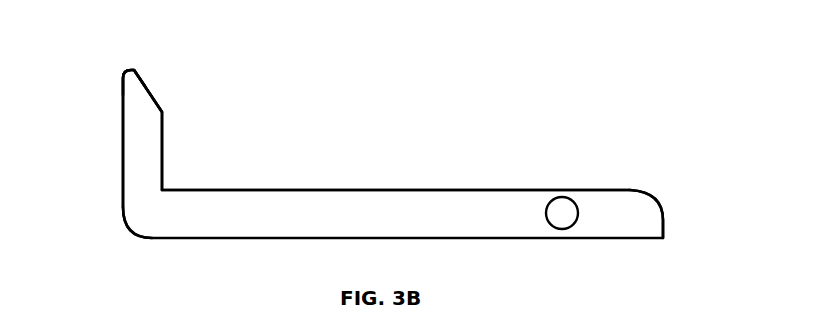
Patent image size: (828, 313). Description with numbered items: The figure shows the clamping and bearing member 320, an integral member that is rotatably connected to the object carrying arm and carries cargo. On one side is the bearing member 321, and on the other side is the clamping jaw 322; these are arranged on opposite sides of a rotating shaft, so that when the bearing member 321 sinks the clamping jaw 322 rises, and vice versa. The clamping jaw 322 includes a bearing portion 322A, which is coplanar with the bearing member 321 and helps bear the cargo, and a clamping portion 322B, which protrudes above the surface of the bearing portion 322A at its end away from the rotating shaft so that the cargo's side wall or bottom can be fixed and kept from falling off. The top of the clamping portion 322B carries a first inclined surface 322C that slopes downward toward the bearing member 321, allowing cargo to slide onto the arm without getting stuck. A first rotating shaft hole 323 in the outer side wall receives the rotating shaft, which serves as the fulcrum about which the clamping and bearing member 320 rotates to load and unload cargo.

The clamping and bearing member 320 is at (395, 42).
The bearing member 321 is at (630, 208).
The clamping jaw 322 is at (124, 200).
The bearing portion 322A is at (268, 190).
The clamping portion 322B is at (128, 95).
The first inclined surface 322C is at (160, 105).
The first rotating shaft hole 323 is at (565, 197).